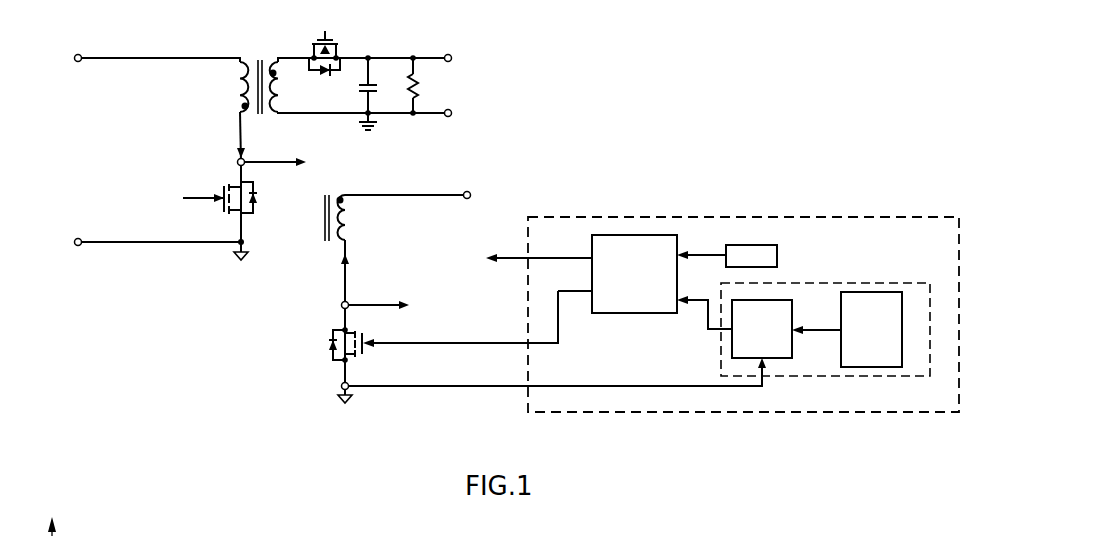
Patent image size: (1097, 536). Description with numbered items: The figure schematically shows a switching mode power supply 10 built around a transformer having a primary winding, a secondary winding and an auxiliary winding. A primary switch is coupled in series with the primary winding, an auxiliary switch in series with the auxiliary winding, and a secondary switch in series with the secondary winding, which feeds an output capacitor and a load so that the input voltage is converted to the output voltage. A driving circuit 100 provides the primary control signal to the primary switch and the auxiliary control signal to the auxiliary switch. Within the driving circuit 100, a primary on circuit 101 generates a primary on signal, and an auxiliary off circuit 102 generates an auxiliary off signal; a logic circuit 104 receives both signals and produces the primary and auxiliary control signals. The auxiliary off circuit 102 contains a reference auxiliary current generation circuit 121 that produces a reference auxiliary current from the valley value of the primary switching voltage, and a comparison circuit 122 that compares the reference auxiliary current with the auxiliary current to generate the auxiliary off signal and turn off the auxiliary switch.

The switching mode power supply 10 is at (862, 87).
The driving circuit 100 is at (866, 258).
The primary on circuit 101 is at (751, 256).
The auxiliary off circuit 102 is at (907, 285).
The logic circuit 104 is at (634, 274).
The reference auxiliary current generation circuit 121 is at (871, 329).
The comparison circuit 122 is at (762, 329).